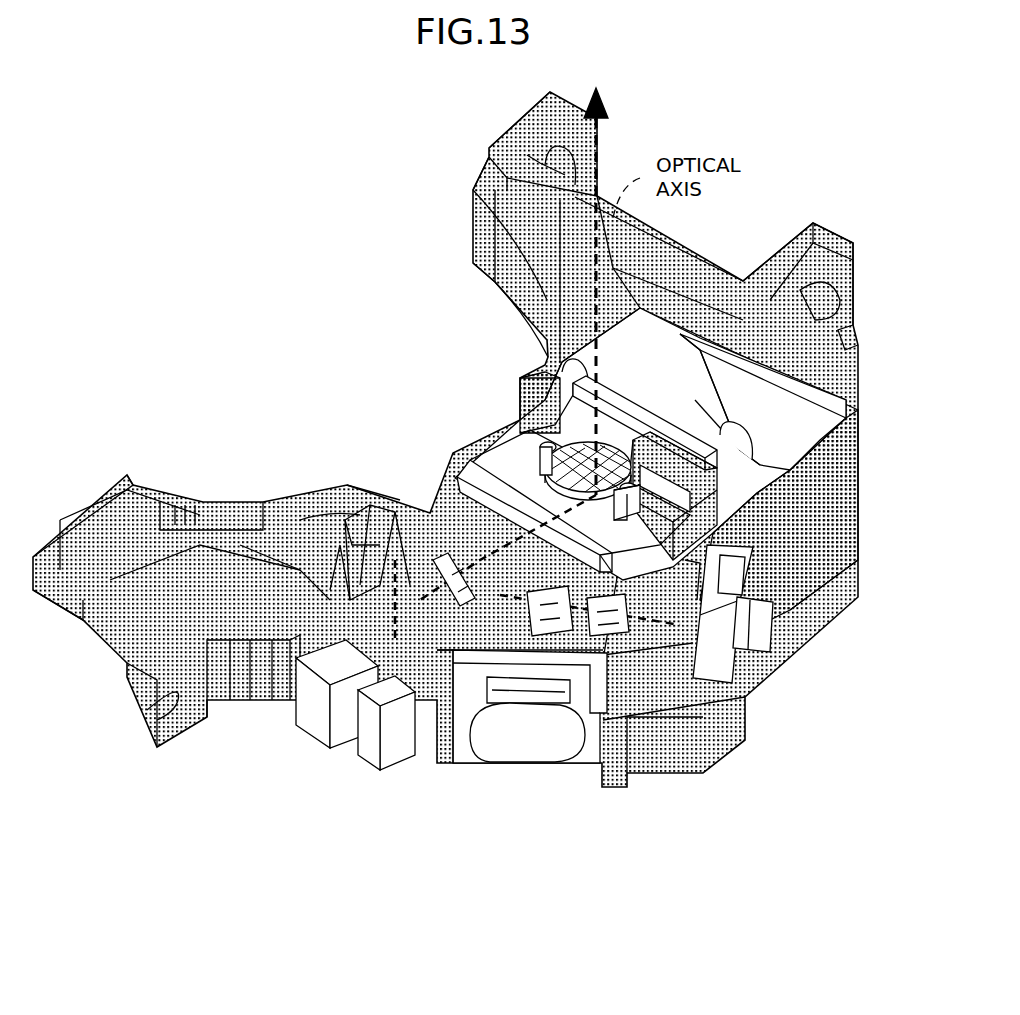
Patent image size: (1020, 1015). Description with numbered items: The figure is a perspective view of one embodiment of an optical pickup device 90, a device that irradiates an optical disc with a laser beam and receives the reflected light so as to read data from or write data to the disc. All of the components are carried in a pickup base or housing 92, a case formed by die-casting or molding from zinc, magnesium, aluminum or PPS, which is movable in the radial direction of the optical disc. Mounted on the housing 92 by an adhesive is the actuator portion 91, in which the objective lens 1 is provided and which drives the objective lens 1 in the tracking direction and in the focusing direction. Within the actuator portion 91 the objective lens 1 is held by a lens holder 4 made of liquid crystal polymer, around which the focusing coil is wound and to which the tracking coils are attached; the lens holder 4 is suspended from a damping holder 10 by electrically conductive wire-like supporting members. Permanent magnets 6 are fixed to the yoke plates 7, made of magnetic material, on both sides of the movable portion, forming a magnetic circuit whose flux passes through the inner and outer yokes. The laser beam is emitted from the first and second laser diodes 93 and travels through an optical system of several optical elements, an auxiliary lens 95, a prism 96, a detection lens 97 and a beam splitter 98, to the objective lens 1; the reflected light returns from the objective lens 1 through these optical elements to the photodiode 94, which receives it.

The objective lens 1 is at (530, 447).
The lens holder 4 is at (520, 452).
The magnets 6 is at (537, 405).
The yoke plates 7 is at (488, 455).
The damping holder 10 is at (823, 420).
The optical pickup device 90 is at (742, 768).
The actuator portion 91 is at (812, 380).
The pickup base (housing) 92 is at (822, 244).
The laser diodes 93 is at (630, 745).
The photodiode 94 is at (327, 752).
The auxiliary lens 95 is at (705, 610).
The prism 96 is at (413, 530).
The detection lens 97 is at (335, 545).
The beam splitter 98 is at (385, 560).